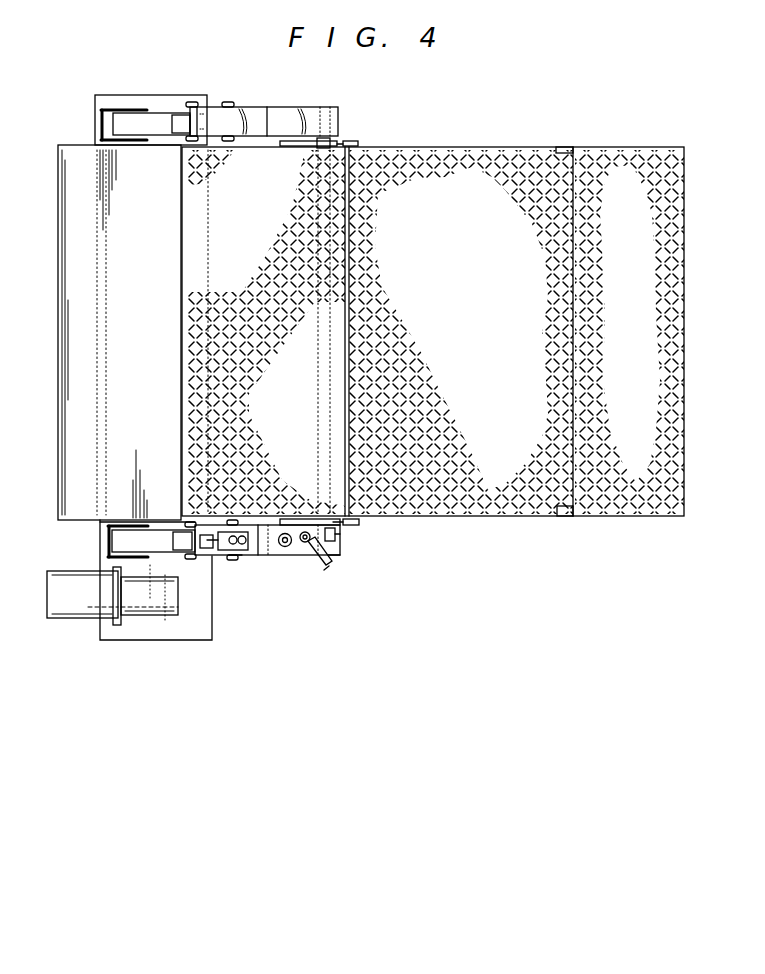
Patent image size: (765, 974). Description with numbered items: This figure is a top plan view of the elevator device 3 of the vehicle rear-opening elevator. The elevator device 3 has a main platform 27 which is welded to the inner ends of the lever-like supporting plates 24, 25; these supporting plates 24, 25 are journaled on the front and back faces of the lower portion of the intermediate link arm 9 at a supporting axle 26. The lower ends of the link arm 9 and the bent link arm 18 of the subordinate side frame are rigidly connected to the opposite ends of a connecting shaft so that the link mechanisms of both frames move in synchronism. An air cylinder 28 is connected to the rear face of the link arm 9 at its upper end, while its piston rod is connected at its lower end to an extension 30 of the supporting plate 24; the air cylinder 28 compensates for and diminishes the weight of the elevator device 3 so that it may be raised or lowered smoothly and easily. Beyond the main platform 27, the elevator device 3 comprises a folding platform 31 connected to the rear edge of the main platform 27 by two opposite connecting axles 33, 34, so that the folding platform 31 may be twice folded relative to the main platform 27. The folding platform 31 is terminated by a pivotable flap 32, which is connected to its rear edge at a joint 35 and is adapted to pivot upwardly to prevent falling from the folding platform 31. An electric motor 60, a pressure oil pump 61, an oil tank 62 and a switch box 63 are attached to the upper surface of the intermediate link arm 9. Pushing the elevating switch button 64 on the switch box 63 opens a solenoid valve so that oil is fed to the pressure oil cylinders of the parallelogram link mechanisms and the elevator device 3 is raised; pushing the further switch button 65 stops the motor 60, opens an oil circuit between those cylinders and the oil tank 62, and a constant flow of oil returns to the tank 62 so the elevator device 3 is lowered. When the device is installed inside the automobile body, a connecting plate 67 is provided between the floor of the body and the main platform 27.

The elevator device 3 is at (406, 147).
The intermediate link arm 9 is at (205, 556).
The bent link arm 18 is at (335, 112).
The supporting plate 24 is at (340, 556).
The supporting plate 25 is at (291, 555).
The supporting axle 26 is at (336, 534).
The main platform 27 is at (266, 160).
The air cylinder 28 is at (316, 558).
The extension 30 is at (332, 568).
The folding platform 31 is at (469, 147).
The pivotable flap 32 is at (619, 147).
The connecting axle 33 is at (350, 524).
The connecting axle 34 is at (345, 142).
The joint 35 is at (566, 517).
The electric motor 60 is at (149, 608).
The pressure oil pump 61 is at (110, 618).
The oil tank 62 is at (60, 578).
The switch box 63 is at (240, 556).
The elevating switch button 64 is at (226, 548).
The switch button 65 is at (246, 541).
The connecting plate 67 is at (75, 241).